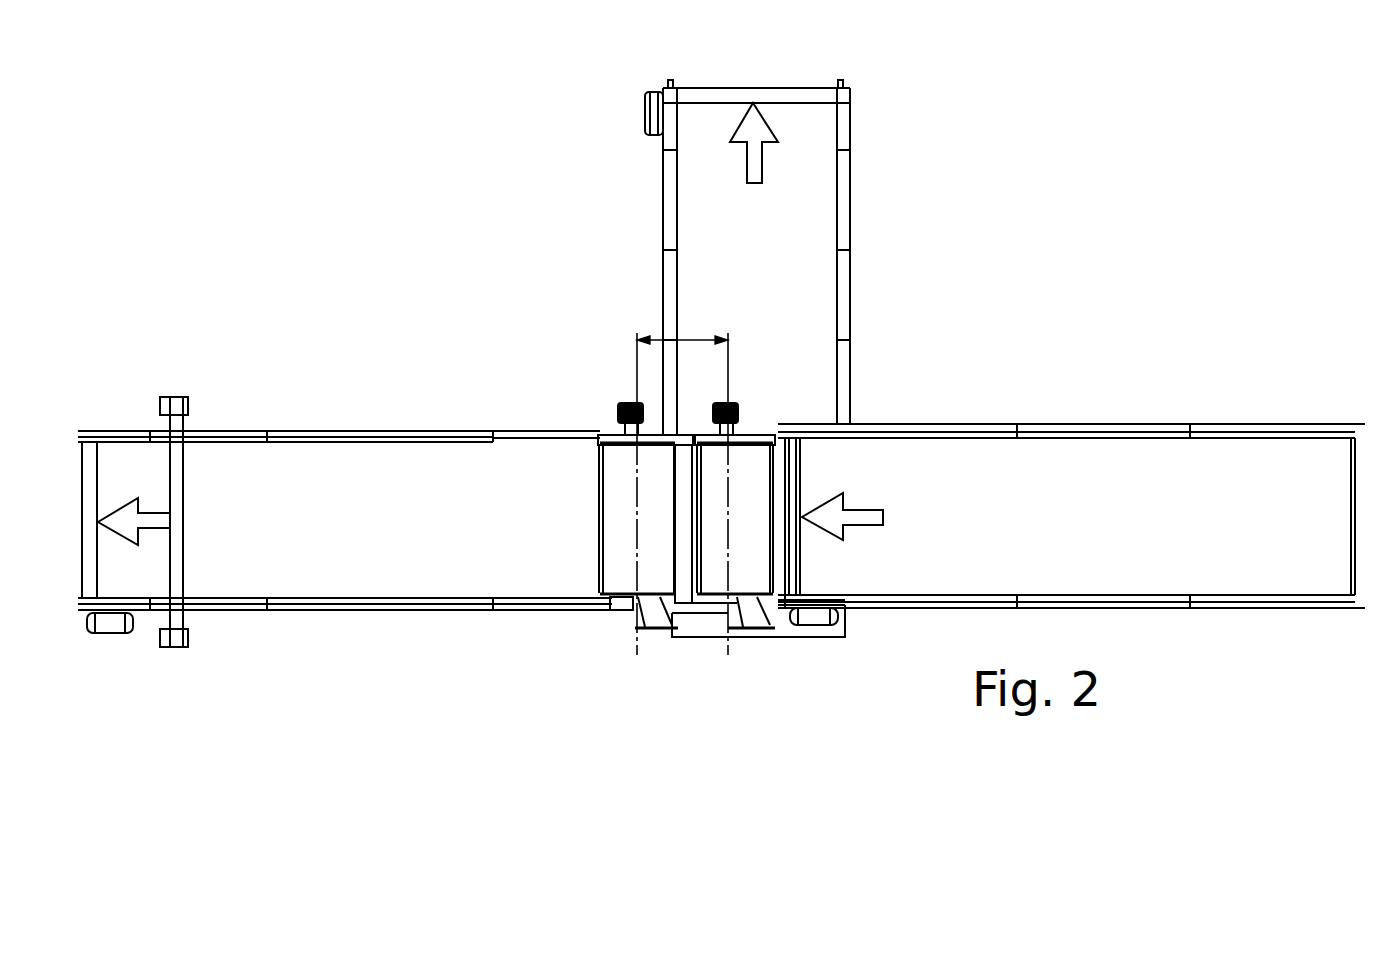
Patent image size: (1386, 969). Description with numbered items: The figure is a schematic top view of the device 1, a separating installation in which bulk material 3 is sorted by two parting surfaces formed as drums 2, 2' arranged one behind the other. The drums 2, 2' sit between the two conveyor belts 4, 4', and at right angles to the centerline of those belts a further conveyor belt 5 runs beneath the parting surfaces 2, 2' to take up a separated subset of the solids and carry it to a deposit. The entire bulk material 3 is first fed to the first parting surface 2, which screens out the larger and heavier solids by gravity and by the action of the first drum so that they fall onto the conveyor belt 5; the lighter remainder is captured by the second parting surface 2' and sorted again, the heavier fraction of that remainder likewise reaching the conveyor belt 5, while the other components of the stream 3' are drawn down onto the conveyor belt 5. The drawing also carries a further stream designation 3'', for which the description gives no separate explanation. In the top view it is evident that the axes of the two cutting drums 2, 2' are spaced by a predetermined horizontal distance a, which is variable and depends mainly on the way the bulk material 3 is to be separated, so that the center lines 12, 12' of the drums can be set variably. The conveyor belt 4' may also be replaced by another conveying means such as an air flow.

The device 1 is at (1043, 202).
The first parting surface 2 is at (757, 550).
The second parting surface 2' is at (618, 554).
The bulk material 3 is at (859, 496).
The subset of bulk material 3' is at (779, 146).
The conveying direction of second outfeed conveyor 3'' is at (185, 510).
The conveyor belt 4 is at (1071, 516).
The conveyor belt 4' is at (345, 522).
The conveyor belt 5 is at (768, 294).
The center line 12 is at (776, 491).
The center line 12' is at (579, 490).
The predetermined distance a is at (682, 326).